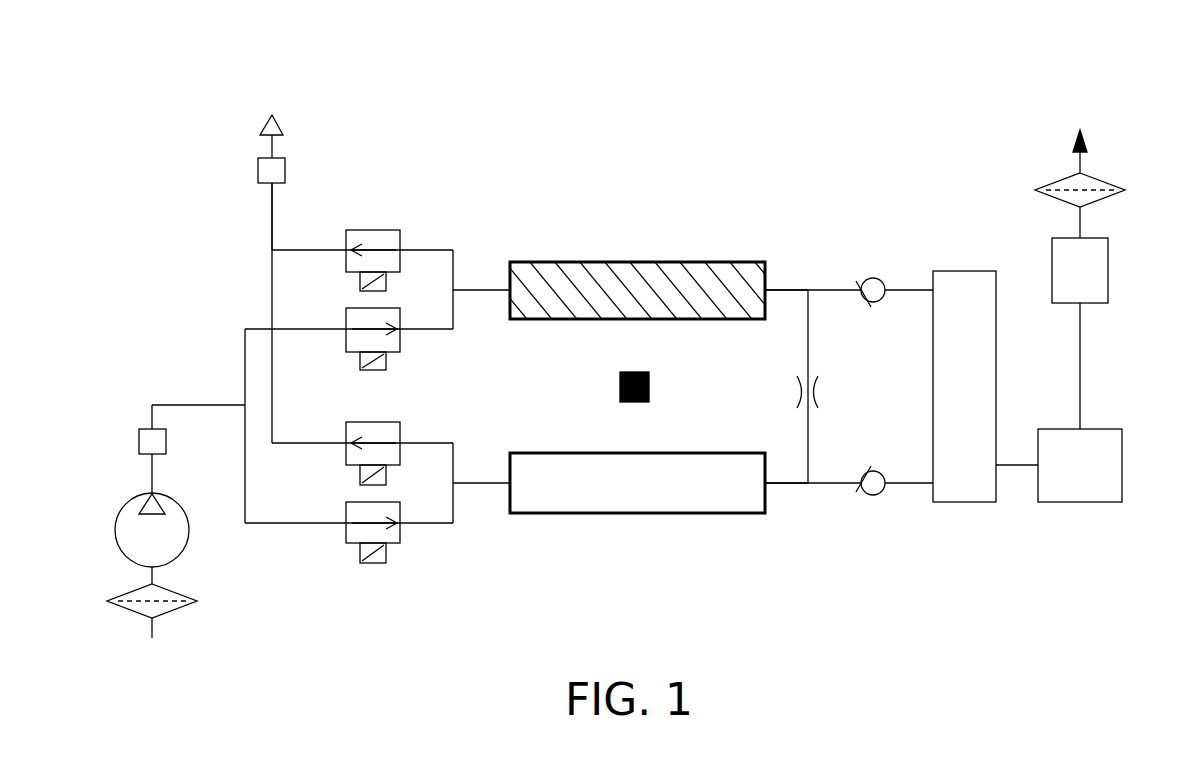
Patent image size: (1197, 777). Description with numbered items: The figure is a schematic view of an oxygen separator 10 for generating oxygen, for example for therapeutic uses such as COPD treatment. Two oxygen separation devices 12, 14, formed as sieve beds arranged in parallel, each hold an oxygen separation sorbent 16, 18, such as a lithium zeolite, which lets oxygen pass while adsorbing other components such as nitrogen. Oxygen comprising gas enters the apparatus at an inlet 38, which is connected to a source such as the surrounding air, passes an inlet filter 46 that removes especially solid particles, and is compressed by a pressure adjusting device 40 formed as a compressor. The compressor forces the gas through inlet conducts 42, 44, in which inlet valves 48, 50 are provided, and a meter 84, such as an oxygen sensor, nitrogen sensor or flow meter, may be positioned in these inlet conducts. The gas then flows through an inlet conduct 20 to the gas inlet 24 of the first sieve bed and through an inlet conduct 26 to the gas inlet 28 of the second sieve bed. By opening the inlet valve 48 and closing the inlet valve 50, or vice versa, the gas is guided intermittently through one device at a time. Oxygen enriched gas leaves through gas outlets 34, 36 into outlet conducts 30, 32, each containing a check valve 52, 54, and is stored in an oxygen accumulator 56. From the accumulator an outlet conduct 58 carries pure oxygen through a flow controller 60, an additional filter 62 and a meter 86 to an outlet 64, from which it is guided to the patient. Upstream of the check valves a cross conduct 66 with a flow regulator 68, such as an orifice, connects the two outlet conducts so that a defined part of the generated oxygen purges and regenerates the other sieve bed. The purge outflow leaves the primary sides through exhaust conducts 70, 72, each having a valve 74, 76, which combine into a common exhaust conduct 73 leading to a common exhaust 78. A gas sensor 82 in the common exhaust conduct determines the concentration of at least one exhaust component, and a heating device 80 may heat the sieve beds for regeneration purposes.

The oxygen separator 10 is at (138, 110).
The oxygen separation device 12 is at (582, 262).
The oxygen separation device 14 is at (575, 513).
The oxygen separation sorbent 16 is at (690, 277).
The oxygen separation sorbent 18 is at (681, 495).
The inlet conduct 20 is at (470, 292).
The gas inlet 24 is at (508, 289).
The inlet conduct 26 is at (470, 482).
The gas inlet 28 is at (508, 485).
The outlet conduct 30 is at (842, 288).
The outlet conduct 32 is at (842, 486).
The gas outlet 34 is at (766, 289).
The gas outlet 36 is at (766, 485).
The inlet 38 is at (150, 632).
The pressure adjusting device 40 is at (116, 526).
The inlet conduct 42 is at (288, 329).
The inlet conduct 44 is at (288, 523).
The inlet filter 46 is at (129, 594).
The inlet valve 48 is at (401, 340).
The inlet valve 50 is at (345, 531).
The valve 52 is at (870, 277).
The valve 54 is at (870, 498).
The oxygen accumulator 56 is at (960, 271).
The outlet conduct 58 is at (1081, 362).
The flow controller 60 is at (1123, 467).
The additional filter 62 is at (1096, 180).
The outlet 64 is at (1090, 140).
The cross conduct 66 is at (809, 330).
The flow regulator 68 is at (818, 399).
The exhaust conduct 70 is at (288, 250).
The exhaust conduct 72 is at (288, 443).
The common exhaust conduct 73 is at (271, 226).
The valve 74 is at (375, 230).
The valve 76 is at (401, 431).
The common exhaust 78 is at (261, 128).
The heating device 80 is at (652, 390).
The gas sensor 82 is at (258, 172).
The meter 84 is at (138, 442).
The meter 86 is at (1109, 272).